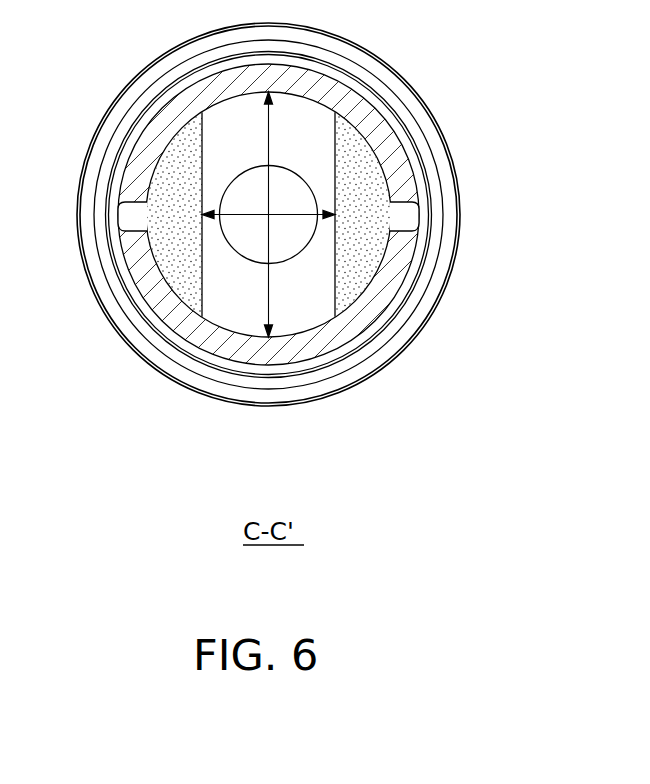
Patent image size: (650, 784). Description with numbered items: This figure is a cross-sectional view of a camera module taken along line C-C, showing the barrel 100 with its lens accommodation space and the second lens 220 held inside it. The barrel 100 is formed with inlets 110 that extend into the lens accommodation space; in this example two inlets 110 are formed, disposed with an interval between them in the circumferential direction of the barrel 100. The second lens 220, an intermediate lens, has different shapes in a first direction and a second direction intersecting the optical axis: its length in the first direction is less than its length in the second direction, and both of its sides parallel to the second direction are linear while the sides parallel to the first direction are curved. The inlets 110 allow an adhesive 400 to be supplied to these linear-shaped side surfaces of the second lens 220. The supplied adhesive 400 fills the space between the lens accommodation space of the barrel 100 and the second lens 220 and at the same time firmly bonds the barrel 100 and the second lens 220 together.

The barrel 100 is at (383, 130).
The inlets 110 is at (123, 215).
The second lens 220 is at (312, 270).
The adhesive 400 is at (177, 167).